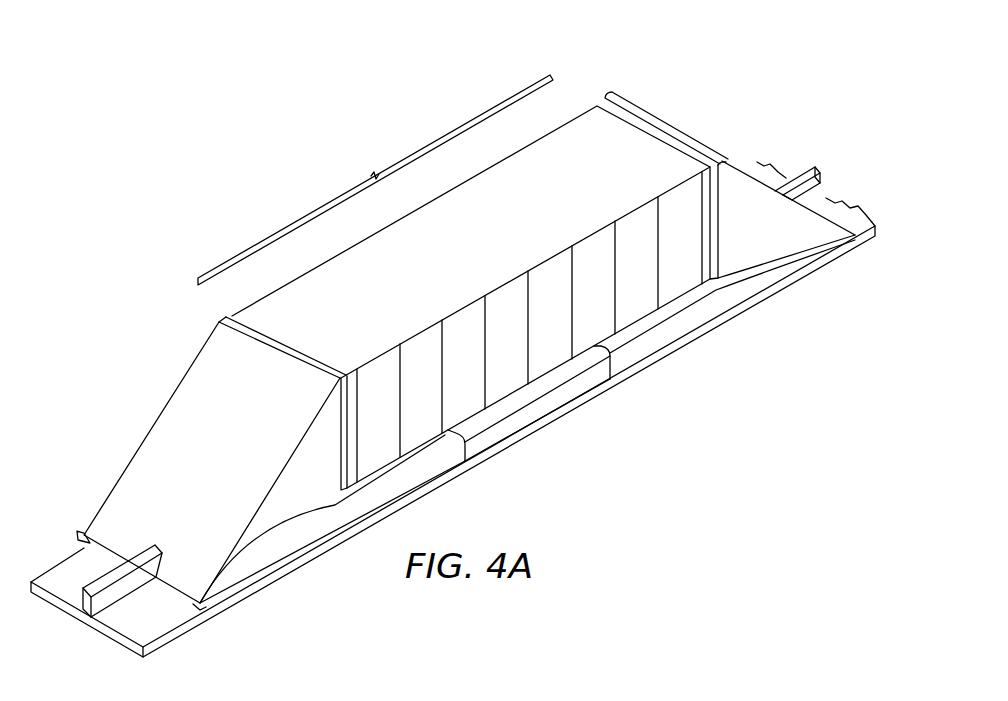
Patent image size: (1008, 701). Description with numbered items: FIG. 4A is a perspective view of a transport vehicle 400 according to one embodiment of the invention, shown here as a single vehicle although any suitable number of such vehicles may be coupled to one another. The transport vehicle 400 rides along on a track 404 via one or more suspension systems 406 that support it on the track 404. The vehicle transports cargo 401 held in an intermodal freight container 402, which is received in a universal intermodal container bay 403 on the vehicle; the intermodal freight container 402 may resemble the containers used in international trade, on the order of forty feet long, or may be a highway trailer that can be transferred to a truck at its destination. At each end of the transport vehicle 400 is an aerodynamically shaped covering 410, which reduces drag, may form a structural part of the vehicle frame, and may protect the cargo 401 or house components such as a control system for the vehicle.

The transport vehicle 400 is at (240, 176).
The cargo 401 is at (375, 180).
The intermodal freight container 402 is at (595, 110).
The universal intermodal container bay 403 is at (508, 397).
The track 404 is at (103, 599).
The suspension system 406 is at (657, 347).
The aerodynamically shaped covering 410 is at (156, 435).